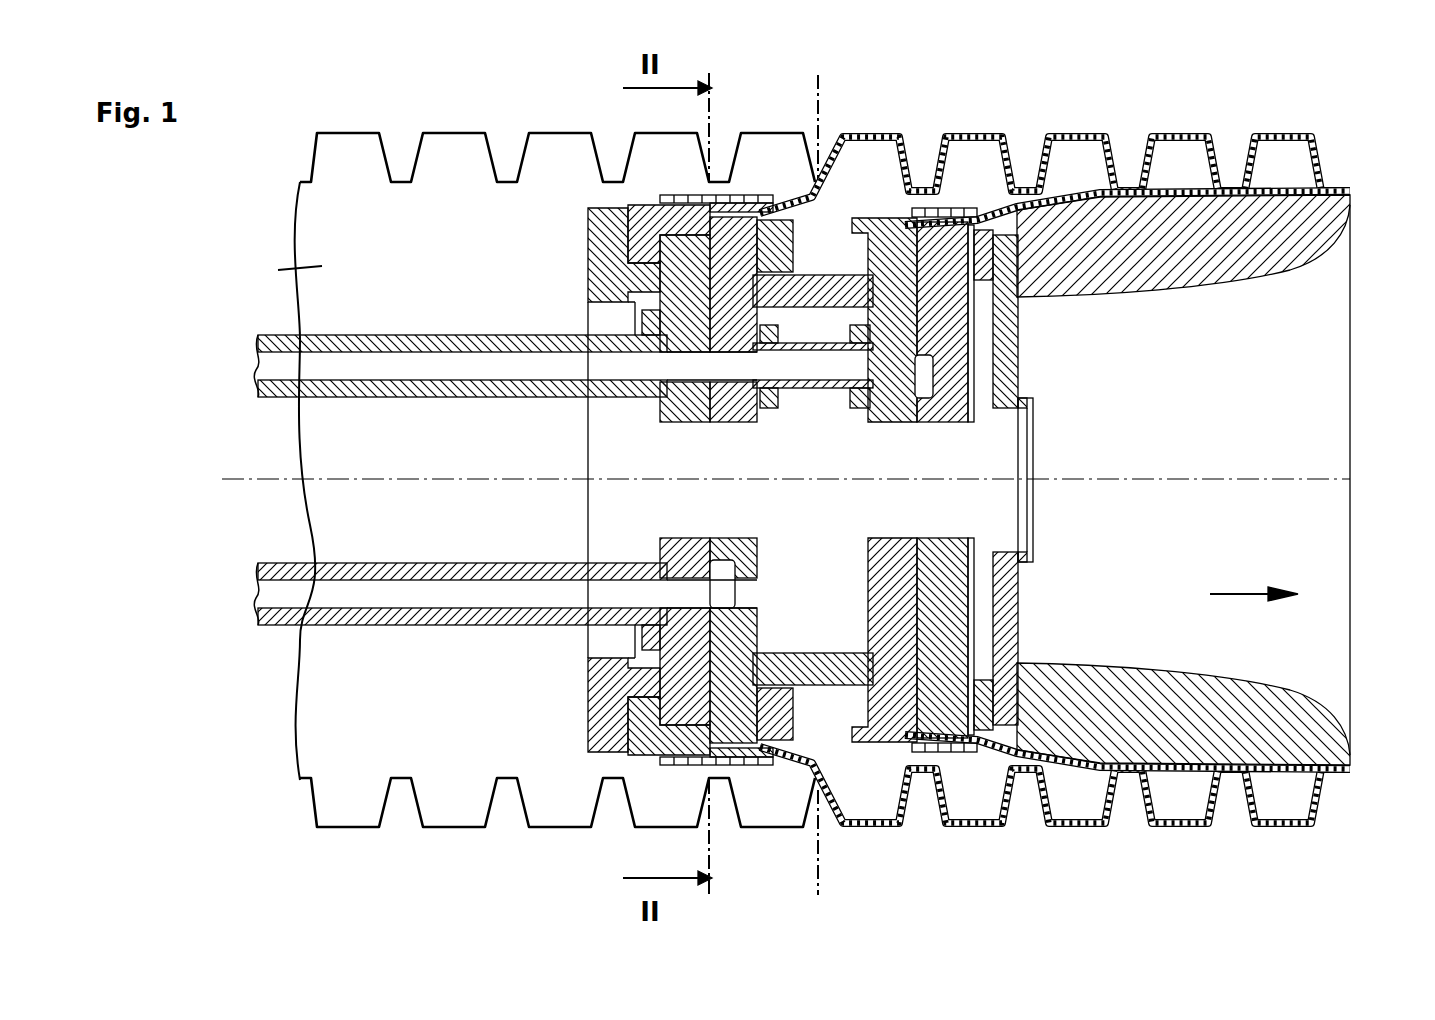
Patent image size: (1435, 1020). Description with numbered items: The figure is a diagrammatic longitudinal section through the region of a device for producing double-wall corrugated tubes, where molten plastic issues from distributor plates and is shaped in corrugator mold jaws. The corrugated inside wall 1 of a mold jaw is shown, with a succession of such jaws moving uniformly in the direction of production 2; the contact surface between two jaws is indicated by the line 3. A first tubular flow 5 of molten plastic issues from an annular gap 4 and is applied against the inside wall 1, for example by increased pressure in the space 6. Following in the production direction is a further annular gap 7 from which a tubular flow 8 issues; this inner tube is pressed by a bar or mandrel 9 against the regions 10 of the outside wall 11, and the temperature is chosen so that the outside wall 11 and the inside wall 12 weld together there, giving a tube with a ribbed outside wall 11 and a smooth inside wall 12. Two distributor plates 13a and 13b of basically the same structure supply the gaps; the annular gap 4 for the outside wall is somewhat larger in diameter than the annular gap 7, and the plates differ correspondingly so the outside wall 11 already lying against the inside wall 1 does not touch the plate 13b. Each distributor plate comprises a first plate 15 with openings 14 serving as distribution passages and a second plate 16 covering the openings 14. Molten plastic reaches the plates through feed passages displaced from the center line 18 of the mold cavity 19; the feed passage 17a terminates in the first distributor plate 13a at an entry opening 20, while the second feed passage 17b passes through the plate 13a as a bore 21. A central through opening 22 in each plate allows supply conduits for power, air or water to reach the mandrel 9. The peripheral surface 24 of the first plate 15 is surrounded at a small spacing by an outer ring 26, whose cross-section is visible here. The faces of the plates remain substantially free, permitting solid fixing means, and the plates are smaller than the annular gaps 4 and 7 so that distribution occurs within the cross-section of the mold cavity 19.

The inside wall of corrugator mold jaw 1 is at (452, 133).
The direction of production 2 is at (1240, 594).
The contact surface line of two mold jaws 3 is at (816, 122).
The annular gap 4 is at (784, 204).
The first tubular flow 5 is at (805, 208).
The space 6 is at (872, 178).
The further annular gap 7 is at (990, 220).
The tubular flow 8 is at (1055, 193).
The bar or mandrel 9 is at (1300, 255).
The regions 10 is at (1242, 140).
The outside wall 11 is at (1178, 133).
The inside wall 12 is at (1352, 193).
The first distributor plate 13a is at (650, 765).
The second distributor plate 13b is at (914, 760).
The openings 14 is at (630, 266).
The first plate 15 is at (750, 637).
The second plate 16 is at (680, 418).
The feed passage 17a is at (265, 598).
The second feed passage 17b is at (265, 370).
The center line 18 is at (1250, 478).
The mold cavity 19 is at (320, 268).
The entry opening 20 is at (930, 397).
The bore 21 is at (735, 355).
The through opening 22 is at (930, 502).
The peripheral surface 24 is at (745, 763).
The outer ring 26 is at (650, 200).